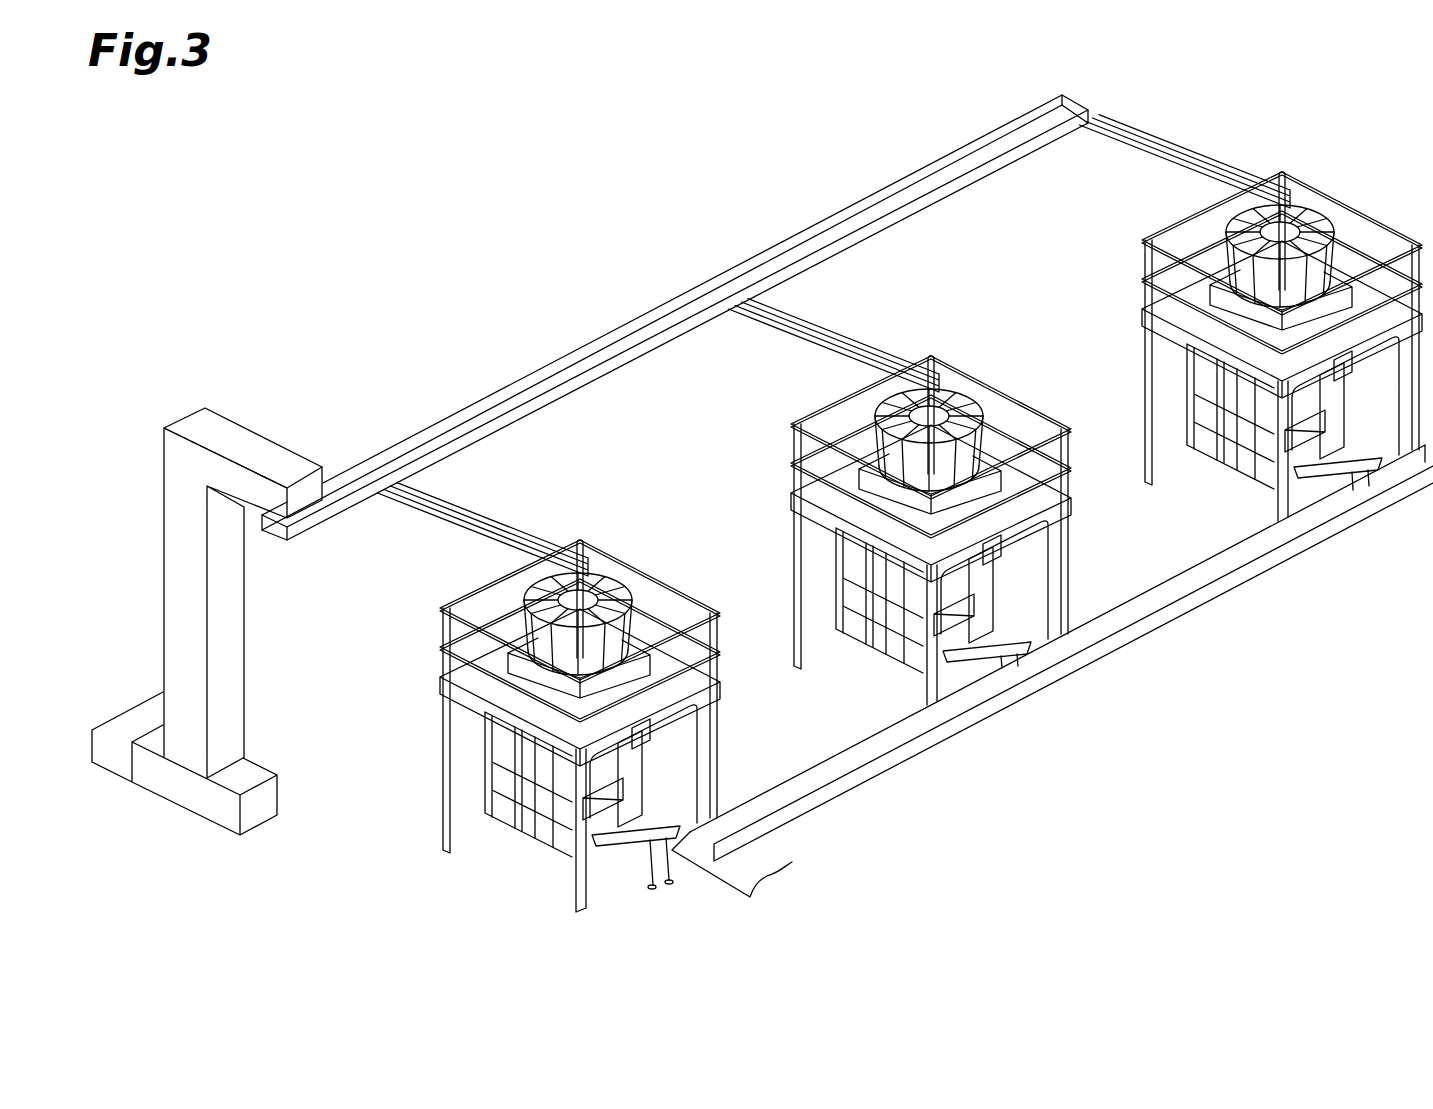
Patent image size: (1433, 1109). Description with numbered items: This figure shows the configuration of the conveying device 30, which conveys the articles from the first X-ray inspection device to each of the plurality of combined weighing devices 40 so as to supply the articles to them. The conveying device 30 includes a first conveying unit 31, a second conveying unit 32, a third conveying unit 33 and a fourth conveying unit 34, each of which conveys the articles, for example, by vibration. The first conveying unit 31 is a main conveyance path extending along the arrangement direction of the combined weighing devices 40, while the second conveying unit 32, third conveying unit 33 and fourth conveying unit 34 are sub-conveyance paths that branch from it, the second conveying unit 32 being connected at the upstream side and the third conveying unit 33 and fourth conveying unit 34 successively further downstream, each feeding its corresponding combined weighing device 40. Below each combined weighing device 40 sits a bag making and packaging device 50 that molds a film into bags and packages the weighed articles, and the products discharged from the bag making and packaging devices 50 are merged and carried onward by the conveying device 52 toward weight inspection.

The conveying device 30 is at (320, 430).
The first conveying unit 31 is at (566, 342).
The second conveying unit 32 is at (498, 522).
The third conveying unit 33 is at (834, 335).
The fourth conveying unit 34 is at (1172, 148).
The combined weighing device 40 is at (472, 577).
The bag making and packaging device 50 is at (511, 855).
The conveying device 52 is at (1190, 586).